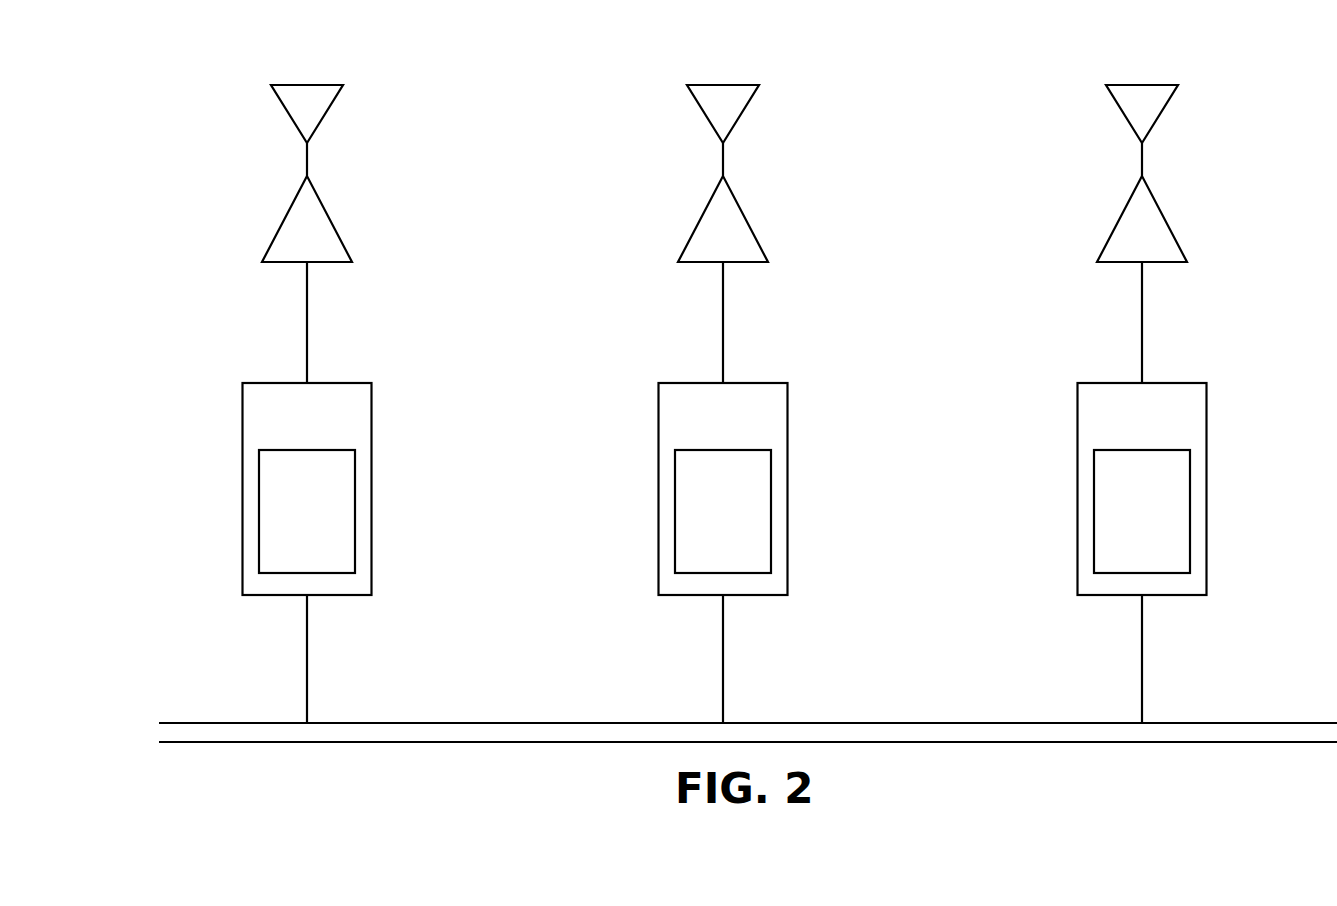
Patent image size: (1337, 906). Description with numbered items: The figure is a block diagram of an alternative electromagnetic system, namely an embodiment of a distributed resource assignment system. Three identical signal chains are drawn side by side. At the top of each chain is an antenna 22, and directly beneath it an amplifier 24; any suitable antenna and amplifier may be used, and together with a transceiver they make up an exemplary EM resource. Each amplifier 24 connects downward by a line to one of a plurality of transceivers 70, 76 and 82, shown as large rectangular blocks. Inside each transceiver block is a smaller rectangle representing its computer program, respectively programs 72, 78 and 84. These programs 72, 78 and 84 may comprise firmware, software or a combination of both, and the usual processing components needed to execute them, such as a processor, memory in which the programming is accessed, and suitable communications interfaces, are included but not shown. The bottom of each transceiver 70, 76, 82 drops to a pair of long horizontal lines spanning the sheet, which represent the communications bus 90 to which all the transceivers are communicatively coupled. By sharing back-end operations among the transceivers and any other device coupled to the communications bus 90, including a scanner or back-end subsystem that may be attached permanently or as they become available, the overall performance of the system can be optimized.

The antenna 22 is at (323, 123).
The amplifier 24 is at (337, 228).
The transceiver 70 is at (242, 435).
The program 72 is at (259, 515).
The transceiver 76 is at (658, 435).
The program 78 is at (675, 512).
The transceiver 82 is at (1077, 428).
The program 84 is at (1094, 533).
The communications bus 90 is at (417, 722).